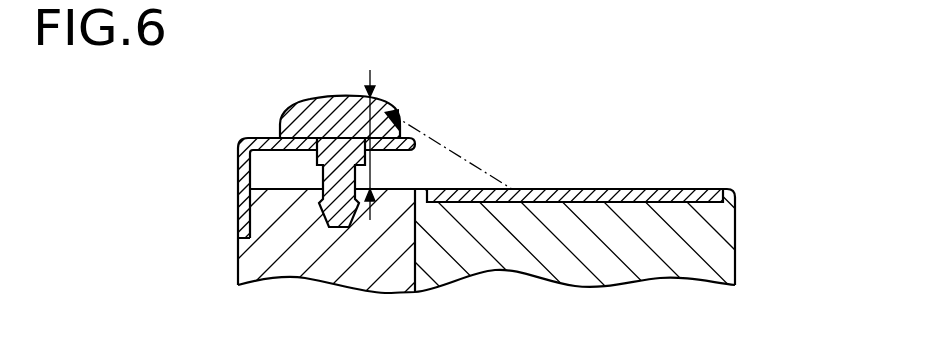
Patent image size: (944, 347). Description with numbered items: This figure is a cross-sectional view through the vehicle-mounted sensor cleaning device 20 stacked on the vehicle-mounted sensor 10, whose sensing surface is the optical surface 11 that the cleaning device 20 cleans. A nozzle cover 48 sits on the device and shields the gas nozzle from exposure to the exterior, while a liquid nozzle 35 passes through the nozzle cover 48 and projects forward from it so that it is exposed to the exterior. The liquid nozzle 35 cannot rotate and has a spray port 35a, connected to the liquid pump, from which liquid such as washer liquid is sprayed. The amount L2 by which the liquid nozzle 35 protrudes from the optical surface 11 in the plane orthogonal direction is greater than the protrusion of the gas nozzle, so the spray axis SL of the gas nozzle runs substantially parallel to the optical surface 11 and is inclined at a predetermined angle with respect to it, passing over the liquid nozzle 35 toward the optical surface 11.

The vehicle-mounted sensor 10 is at (728, 259).
The optical surface 11 is at (681, 189).
The vehicle-mounted sensor cleaning device 20 is at (240, 270).
The liquid nozzle 35 is at (308, 112).
The spray port 35a is at (396, 112).
The nozzle cover 48 is at (246, 177).
The amount by which the liquid nozzles protrude from the optical surface L2 is at (360, 100).
The spray axis SL is at (445, 143).